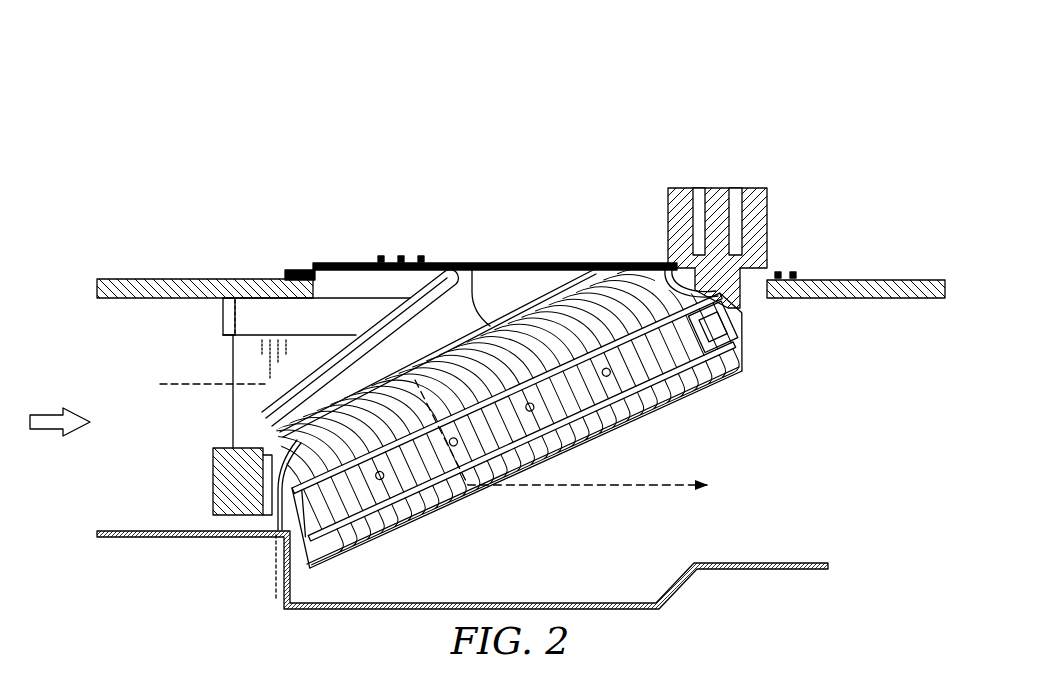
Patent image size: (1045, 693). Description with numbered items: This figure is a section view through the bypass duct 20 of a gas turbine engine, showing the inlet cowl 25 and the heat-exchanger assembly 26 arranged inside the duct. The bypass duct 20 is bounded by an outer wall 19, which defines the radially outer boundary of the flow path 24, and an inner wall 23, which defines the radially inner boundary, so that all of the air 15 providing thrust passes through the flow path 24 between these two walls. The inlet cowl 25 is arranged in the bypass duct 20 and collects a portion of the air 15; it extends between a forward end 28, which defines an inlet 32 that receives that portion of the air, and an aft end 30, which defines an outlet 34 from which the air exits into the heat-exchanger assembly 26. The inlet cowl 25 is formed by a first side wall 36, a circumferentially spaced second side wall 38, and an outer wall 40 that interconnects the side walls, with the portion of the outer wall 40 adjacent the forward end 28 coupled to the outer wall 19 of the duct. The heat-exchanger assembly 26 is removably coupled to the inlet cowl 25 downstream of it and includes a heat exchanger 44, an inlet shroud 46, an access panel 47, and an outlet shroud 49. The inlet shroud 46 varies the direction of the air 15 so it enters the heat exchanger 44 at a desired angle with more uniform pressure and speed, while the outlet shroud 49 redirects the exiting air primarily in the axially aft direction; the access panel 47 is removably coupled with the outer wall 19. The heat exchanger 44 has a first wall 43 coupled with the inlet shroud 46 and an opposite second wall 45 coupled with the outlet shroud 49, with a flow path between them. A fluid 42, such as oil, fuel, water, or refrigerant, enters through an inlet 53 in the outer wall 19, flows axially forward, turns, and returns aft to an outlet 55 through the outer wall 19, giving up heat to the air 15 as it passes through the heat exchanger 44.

The air 15 is at (178, 386).
The outer wall 19 is at (112, 279).
The bypass duct 20 is at (68, 340).
The inner wall 23 is at (113, 537).
The flow path 24 is at (53, 412).
The inlet cowl 25 is at (245, 342).
The heat-exchanger assembly 26 is at (620, 135).
The forward end 28 is at (232, 347).
The aft end 30 is at (478, 285).
The inlet 32 is at (208, 368).
The outlet 34 is at (417, 335).
The first side wall 36 is at (268, 332).
The second side wall 38 is at (337, 343).
The outer wall 40 is at (297, 272).
The fluid 42 is at (745, 362).
The first wall 43 is at (272, 540).
The heat exchanger 44 is at (652, 327).
The second wall 45 is at (343, 555).
The inlet shroud 46 is at (575, 268).
The access panel 47 is at (537, 262).
The outlet shroud 49 is at (675, 408).
The inlet 53 is at (697, 188).
The outlet 55 is at (734, 188).